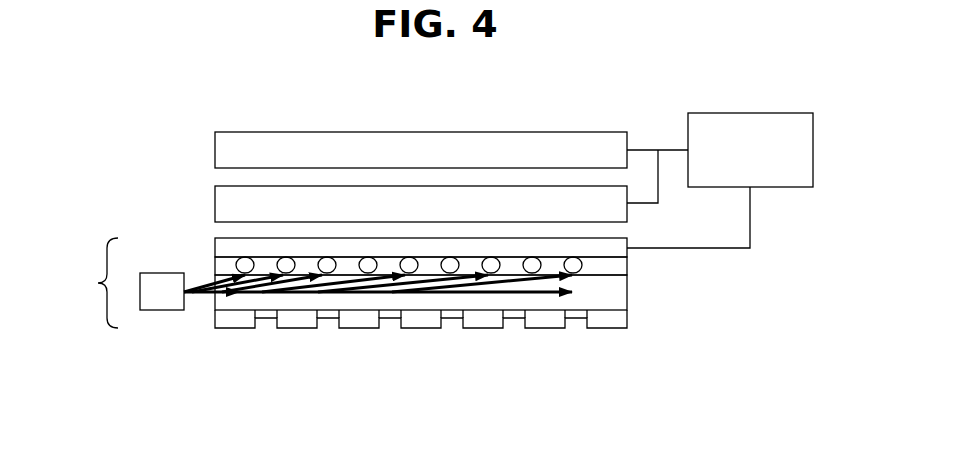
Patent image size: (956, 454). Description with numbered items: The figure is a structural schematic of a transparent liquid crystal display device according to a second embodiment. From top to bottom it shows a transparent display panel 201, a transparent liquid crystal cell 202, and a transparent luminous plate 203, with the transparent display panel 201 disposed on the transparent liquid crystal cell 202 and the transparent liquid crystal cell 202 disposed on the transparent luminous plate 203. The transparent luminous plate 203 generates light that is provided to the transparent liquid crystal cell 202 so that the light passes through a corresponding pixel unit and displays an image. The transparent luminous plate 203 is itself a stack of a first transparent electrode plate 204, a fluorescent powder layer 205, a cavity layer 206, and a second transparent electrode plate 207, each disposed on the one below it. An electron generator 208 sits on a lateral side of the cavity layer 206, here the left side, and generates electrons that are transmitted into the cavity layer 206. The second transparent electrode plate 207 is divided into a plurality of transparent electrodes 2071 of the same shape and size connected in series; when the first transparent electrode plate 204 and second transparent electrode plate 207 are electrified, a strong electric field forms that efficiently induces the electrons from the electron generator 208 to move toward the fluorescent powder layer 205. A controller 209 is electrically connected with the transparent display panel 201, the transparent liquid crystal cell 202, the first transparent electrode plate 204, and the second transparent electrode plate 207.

The transparent display panel 201 is at (215, 140).
The transparent liquid crystal cell 202 is at (215, 199).
The transparent luminous plate 203 is at (97, 283).
The first transparent electrode plate 204 is at (215, 245).
The fluorescent powder layer 205 is at (627, 265).
The cavity layer 206 is at (627, 292).
The second transparent electrode plate 207 is at (455, 363).
The transparent electrode 2071 is at (641, 350).
The electron generator 208 is at (164, 310).
The controller 209 is at (736, 113).